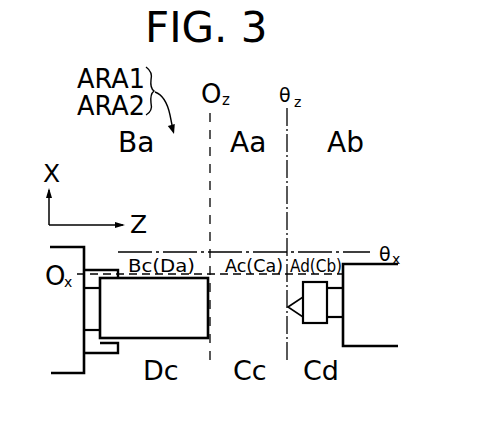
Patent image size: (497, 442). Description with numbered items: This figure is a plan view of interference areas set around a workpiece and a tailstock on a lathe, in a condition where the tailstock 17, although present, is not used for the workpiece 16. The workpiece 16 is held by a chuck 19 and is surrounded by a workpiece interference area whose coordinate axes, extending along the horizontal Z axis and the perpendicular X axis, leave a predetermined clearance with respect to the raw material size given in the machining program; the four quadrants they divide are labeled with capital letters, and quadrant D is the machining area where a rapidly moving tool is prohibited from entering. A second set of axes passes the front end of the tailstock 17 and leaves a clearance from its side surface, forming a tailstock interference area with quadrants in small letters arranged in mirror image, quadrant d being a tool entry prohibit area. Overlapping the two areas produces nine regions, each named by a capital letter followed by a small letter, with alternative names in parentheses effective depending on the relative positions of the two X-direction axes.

The workpiece 16 is at (190, 340).
The tailstock 17 is at (363, 347).
The chuck 19 is at (102, 355).